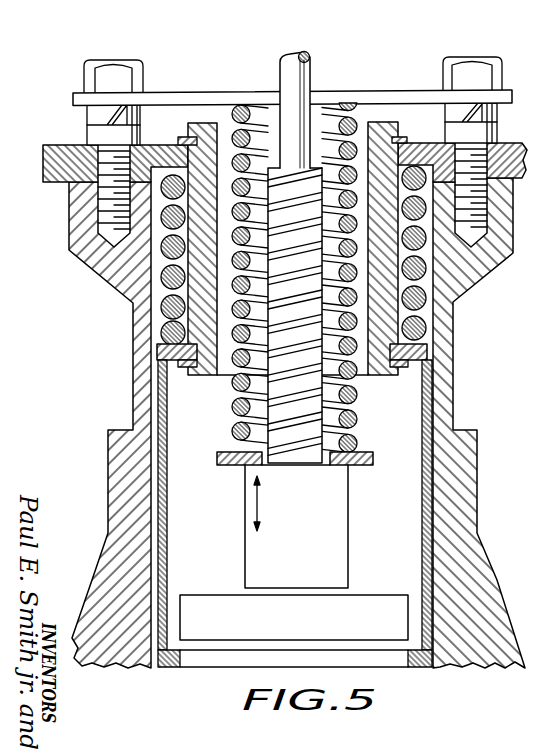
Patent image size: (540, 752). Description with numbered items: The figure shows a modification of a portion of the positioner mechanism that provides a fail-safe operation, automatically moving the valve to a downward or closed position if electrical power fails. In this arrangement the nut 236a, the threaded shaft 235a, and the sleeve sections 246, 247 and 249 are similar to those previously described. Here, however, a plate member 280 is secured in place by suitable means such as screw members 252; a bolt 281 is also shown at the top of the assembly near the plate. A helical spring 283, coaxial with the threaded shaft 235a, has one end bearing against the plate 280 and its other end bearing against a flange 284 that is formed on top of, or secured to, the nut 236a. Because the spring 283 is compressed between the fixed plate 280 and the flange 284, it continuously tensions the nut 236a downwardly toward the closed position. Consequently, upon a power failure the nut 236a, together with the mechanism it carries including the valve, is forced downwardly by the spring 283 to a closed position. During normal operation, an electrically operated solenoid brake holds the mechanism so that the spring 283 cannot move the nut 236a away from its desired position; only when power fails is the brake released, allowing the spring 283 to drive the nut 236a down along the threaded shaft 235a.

The bolt 281 is at (115, 58).
The plate member 280 is at (180, 91).
The helical spring 283 is at (257, 137).
The screw member 252 is at (65, 143).
The sleeve section 247 is at (158, 307).
The threaded shaft 235a is at (309, 298).
The sleeve section 249 is at (170, 363).
The sleeve section 246 is at (167, 483).
The flange 284 is at (227, 468).
The nut 236a is at (330, 553).